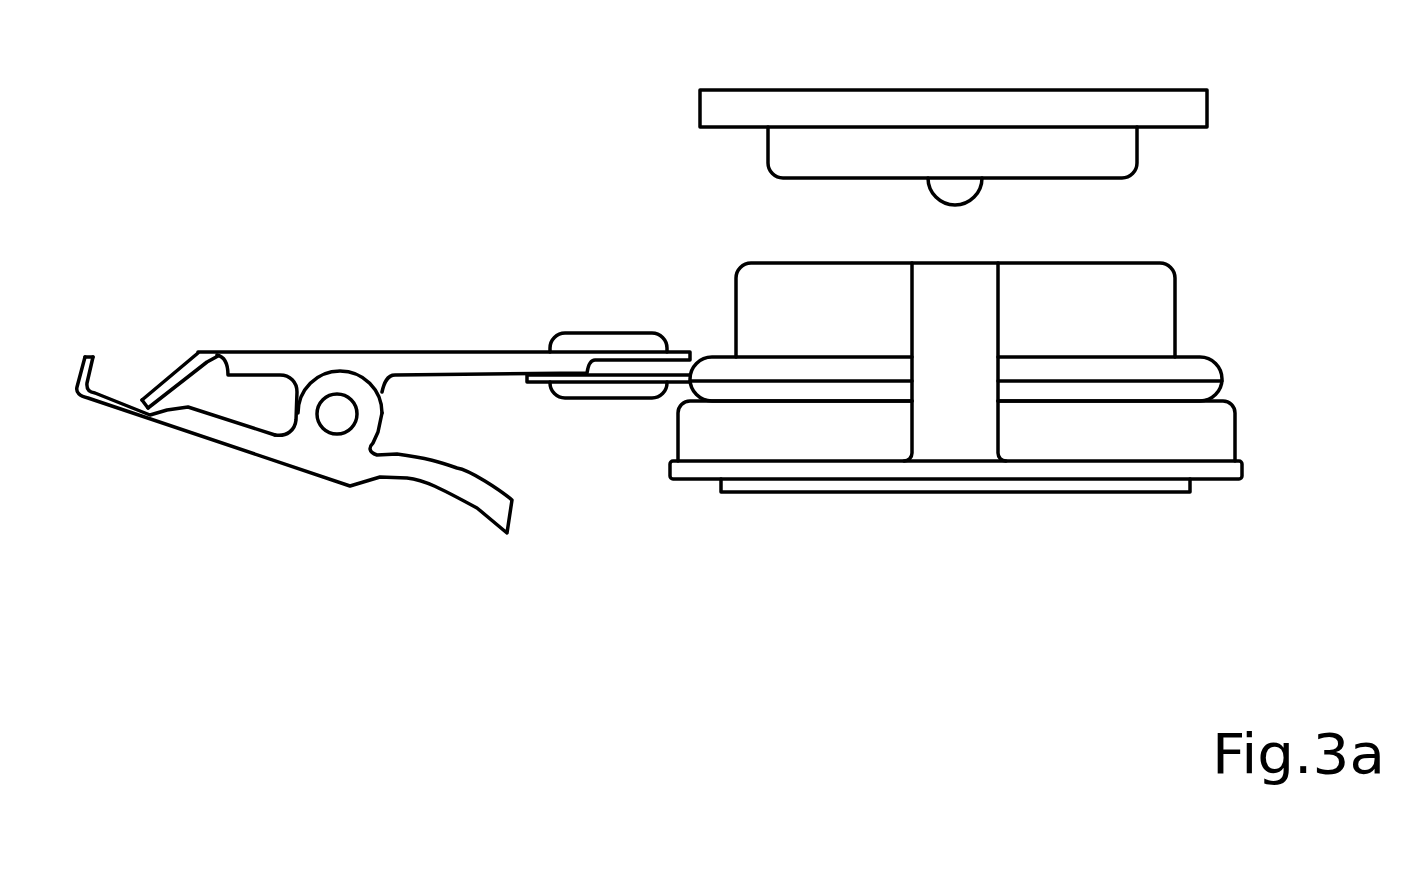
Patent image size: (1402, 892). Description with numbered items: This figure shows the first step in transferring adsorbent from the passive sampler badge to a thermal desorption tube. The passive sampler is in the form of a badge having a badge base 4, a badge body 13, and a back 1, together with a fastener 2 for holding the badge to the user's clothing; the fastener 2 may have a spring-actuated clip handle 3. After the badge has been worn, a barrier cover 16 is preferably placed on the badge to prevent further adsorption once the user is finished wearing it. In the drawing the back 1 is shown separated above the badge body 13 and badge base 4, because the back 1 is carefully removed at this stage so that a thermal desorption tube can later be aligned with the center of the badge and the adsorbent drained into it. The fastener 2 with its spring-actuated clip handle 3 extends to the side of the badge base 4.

The back 1 is at (1033, 90).
The fastener 2 is at (283, 352).
The spring-actuated clip handle 3 is at (293, 470).
The badge base 4 is at (1208, 387).
The badge body 13 is at (1160, 291).
The barrier cover 16 is at (955, 443).